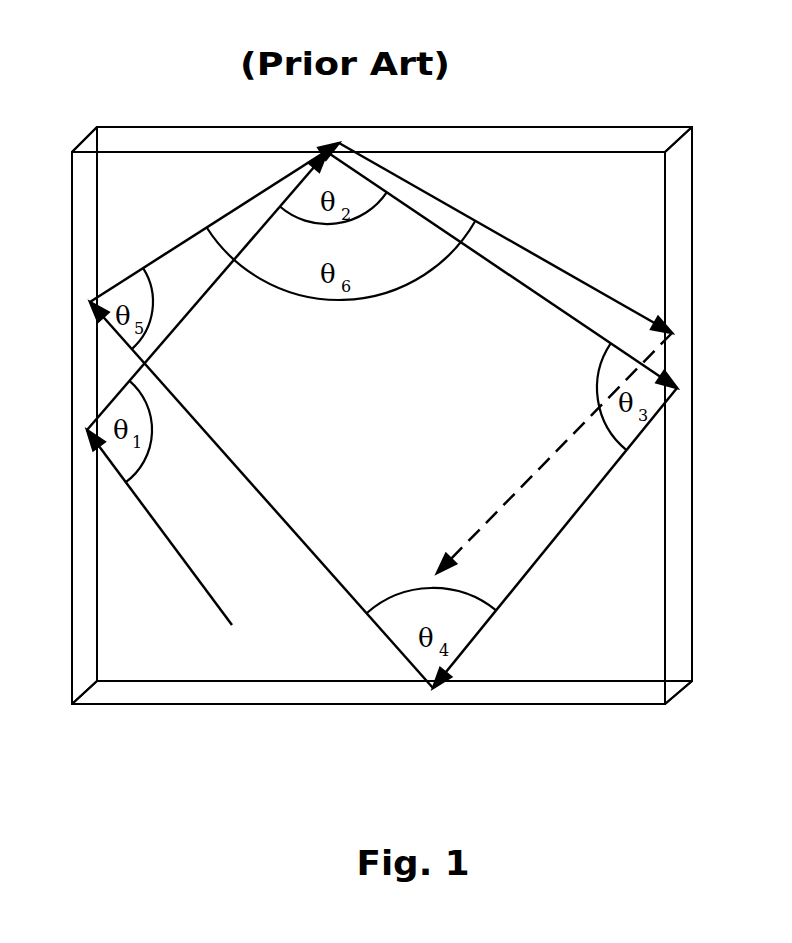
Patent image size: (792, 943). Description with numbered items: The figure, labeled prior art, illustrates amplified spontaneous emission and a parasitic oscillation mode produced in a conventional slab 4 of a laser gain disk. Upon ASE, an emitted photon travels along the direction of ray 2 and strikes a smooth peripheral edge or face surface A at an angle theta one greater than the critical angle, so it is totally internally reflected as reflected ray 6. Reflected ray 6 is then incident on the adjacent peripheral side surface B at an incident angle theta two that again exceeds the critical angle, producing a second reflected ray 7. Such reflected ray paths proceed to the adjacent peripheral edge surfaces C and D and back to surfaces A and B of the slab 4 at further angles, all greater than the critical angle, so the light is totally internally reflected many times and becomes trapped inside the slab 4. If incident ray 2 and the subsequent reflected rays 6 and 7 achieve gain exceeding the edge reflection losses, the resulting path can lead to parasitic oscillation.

The ray 2 is at (200, 588).
The slab 4 is at (413, 391).
The reflected ray 6 is at (193, 313).
The second reflected ray 7 is at (555, 313).
The peripheral edge or face surface A is at (85, 565).
The adjacent peripheral side surface B is at (572, 137).
The peripheral edge surface C is at (678, 178).
The peripheral edge surface D is at (562, 687).